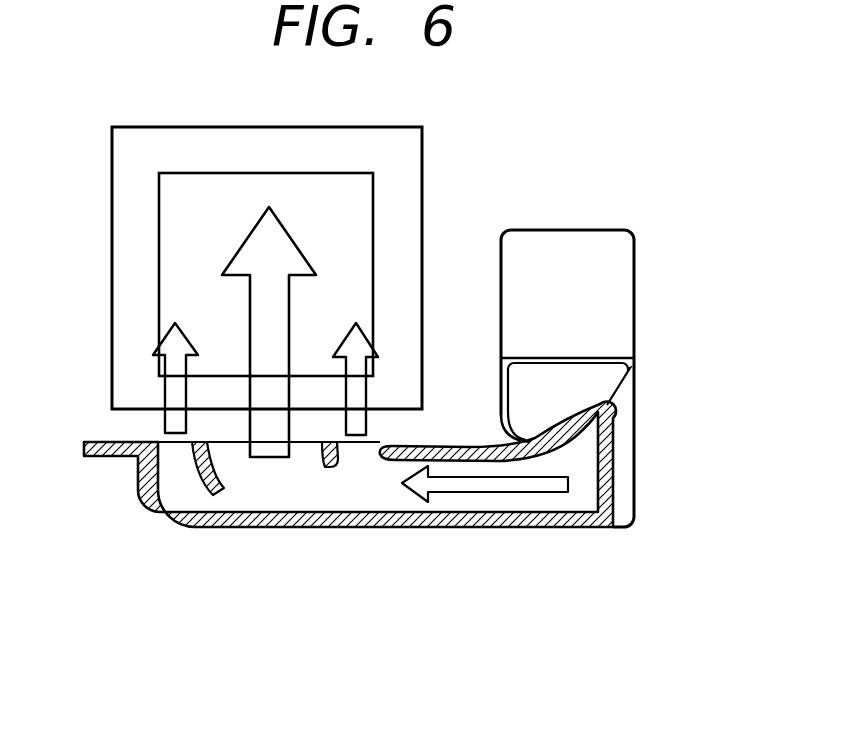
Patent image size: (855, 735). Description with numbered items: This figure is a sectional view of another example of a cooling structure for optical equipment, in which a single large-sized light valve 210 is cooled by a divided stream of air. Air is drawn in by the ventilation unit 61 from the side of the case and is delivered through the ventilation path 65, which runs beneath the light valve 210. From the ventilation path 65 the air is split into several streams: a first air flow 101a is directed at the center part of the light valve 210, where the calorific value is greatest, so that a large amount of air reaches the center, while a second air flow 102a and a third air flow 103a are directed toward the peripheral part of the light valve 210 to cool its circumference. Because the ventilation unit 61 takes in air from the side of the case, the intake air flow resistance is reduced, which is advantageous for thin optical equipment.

The light valve 210 is at (348, 236).
The first air flow 101a is at (255, 247).
The second air flow 102a is at (357, 397).
The third air flow 103a is at (175, 390).
The ventilation unit 61 is at (617, 307).
The ventilation path 65 is at (627, 447).